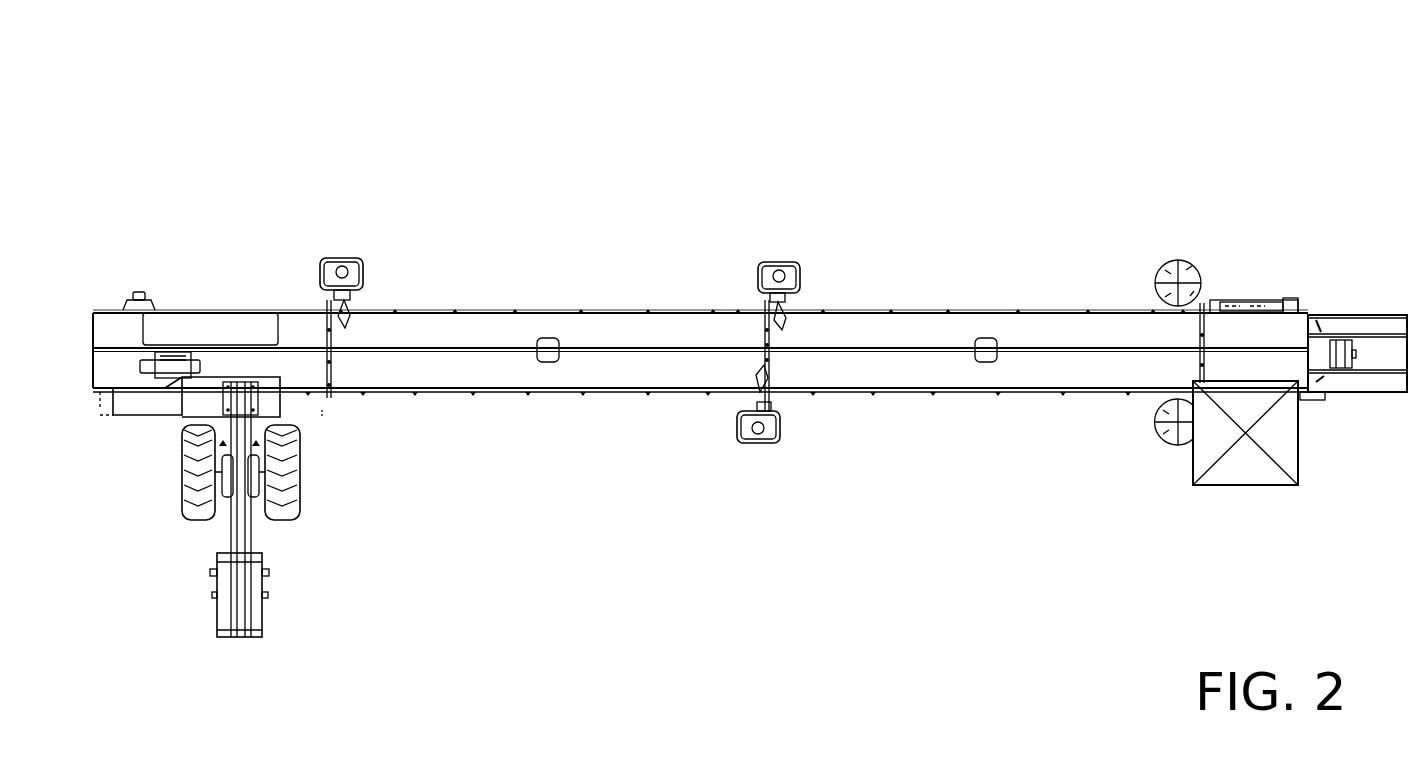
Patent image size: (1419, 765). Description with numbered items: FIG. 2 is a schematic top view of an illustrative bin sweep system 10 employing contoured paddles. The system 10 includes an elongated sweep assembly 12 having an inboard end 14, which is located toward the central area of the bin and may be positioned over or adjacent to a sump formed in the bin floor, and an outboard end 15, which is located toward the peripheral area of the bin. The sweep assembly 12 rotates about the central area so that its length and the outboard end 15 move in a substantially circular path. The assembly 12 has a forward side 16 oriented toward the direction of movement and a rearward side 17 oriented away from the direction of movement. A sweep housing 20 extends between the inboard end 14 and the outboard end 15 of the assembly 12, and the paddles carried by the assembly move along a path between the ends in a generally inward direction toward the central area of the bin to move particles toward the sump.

The system 10 is at (1158, 114).
The sweep assembly 12 is at (1076, 272).
The inboard end 14 is at (1253, 515).
The outboard end 15 is at (110, 268).
The forward side 16 is at (900, 272).
The rearward side 17 is at (916, 432).
The sweep housing 20 is at (923, 337).